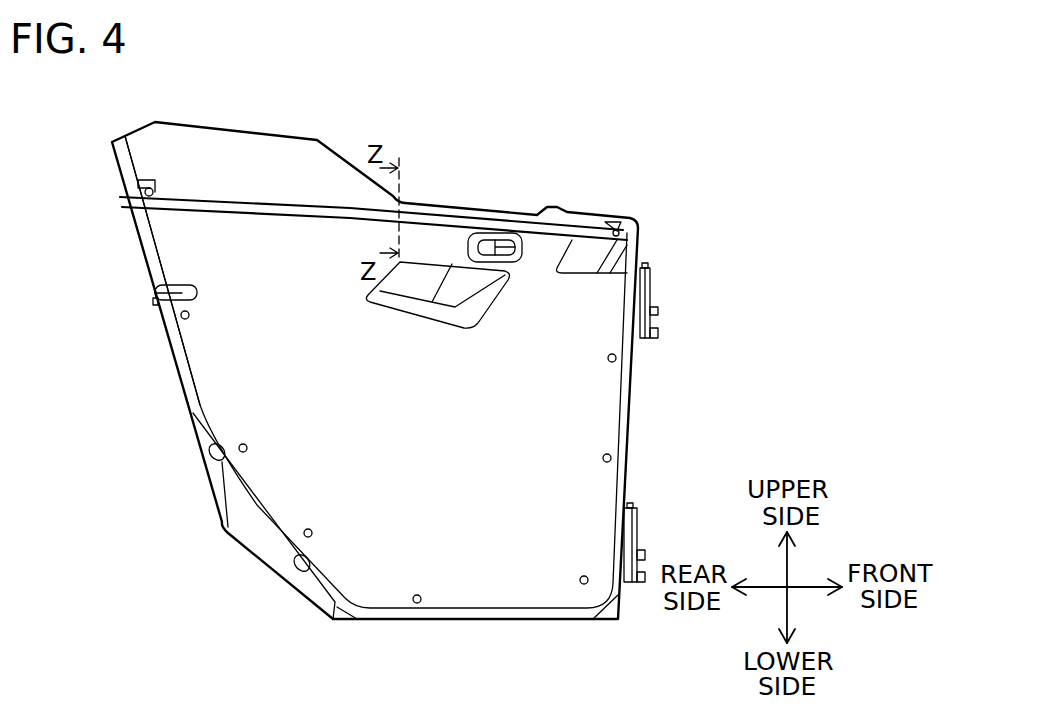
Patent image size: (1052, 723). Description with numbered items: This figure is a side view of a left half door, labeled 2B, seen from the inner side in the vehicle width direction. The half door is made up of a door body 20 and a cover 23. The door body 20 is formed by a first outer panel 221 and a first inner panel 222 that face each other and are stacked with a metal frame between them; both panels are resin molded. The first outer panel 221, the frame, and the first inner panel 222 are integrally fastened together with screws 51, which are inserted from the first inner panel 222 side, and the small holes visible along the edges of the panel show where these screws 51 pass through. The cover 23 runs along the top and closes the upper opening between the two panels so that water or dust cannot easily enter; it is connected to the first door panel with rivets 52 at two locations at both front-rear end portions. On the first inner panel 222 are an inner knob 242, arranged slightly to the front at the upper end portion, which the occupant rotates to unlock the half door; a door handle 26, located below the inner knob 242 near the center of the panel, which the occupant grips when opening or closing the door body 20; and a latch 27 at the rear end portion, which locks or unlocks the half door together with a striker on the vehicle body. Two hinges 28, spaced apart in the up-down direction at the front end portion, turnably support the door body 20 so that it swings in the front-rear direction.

The door body 20 is at (634, 382).
The cover 23 is at (257, 150).
The door (rear door) 2B is at (538, 162).
The rivets 52 is at (145, 193).
The inner knob 242 is at (522, 248).
The hinges 28 is at (652, 285).
The latch 27 is at (153, 292).
The screws 51 is at (181, 316).
The first inner panel 222 is at (223, 360).
The first outer panel 221 is at (217, 477).
The door handle 26 is at (417, 313).